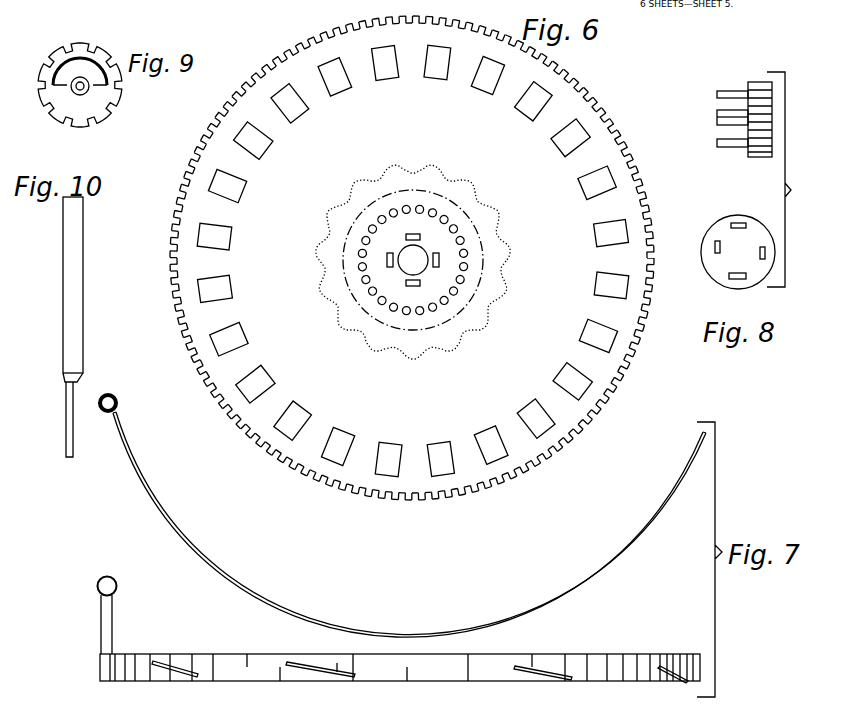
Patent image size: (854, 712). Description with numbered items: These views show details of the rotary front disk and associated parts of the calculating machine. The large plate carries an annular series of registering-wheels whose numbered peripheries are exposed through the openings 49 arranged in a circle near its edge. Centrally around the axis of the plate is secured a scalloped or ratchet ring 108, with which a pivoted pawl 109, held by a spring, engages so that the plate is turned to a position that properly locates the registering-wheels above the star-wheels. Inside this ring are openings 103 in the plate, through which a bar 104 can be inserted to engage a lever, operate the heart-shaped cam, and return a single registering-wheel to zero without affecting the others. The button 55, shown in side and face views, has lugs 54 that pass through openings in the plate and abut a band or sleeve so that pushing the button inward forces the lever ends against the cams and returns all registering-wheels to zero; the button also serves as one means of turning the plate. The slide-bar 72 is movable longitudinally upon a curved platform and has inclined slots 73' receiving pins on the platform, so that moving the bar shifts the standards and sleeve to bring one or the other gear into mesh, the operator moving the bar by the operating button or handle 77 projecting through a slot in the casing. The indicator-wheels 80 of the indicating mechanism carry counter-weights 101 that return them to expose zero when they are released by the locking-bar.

In FIG. 6, the openings 49 is at (490, 432).
In FIG. 8, the lugs 54 is at (717, 140).
In FIG. 8, the button 55 is at (749, 173).
In FIG. 7, the slide-bar 72 is at (617, 660).
In FIG. 7, the inclined slots 73' is at (420, 686).
In FIG. 7, the operating button or handle 77 is at (117, 404).
In FIG. 9, the indicator-wheels 80 is at (100, 104).
In FIG. 9, the counter-weights 101 is at (80, 64).
In FIG. 6, the openings 103 is at (408, 315).
In FIG. 10, the bar 104 is at (80, 327).
In FIG. 6, the scalloped or ratchet ring 108 is at (507, 283).
In FIG. 6, the pivoted pawl 109 is at (416, 165).